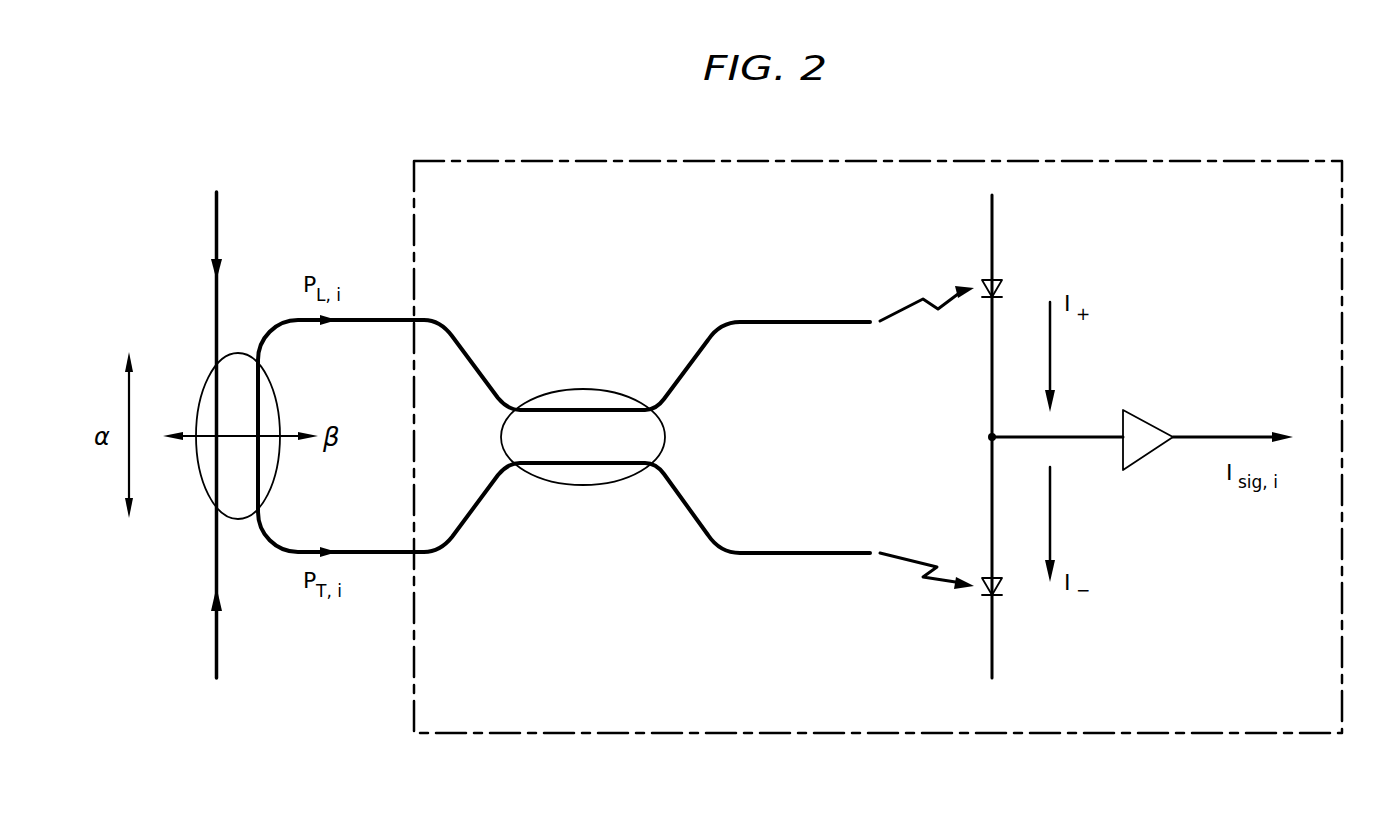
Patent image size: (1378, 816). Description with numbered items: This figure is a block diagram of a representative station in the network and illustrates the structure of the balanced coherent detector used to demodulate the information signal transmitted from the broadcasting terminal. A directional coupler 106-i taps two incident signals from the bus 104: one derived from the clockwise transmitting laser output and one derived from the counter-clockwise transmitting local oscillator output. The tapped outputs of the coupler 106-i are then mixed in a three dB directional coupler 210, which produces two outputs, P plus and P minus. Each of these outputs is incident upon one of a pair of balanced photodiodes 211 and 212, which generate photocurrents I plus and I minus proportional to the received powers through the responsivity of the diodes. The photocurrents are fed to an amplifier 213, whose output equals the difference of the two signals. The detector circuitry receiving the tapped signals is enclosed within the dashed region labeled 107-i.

The bus 104 is at (217, 213).
The directional coupler 106-i is at (208, 495).
The polarization detector receiver 107-i is at (1225, 161).
The 3 dB directional coupler 210 is at (583, 390).
The balanced photodiode 211 is at (985, 280).
The balanced photodiode 212 is at (985, 598).
The amplifier 213 is at (1130, 417).